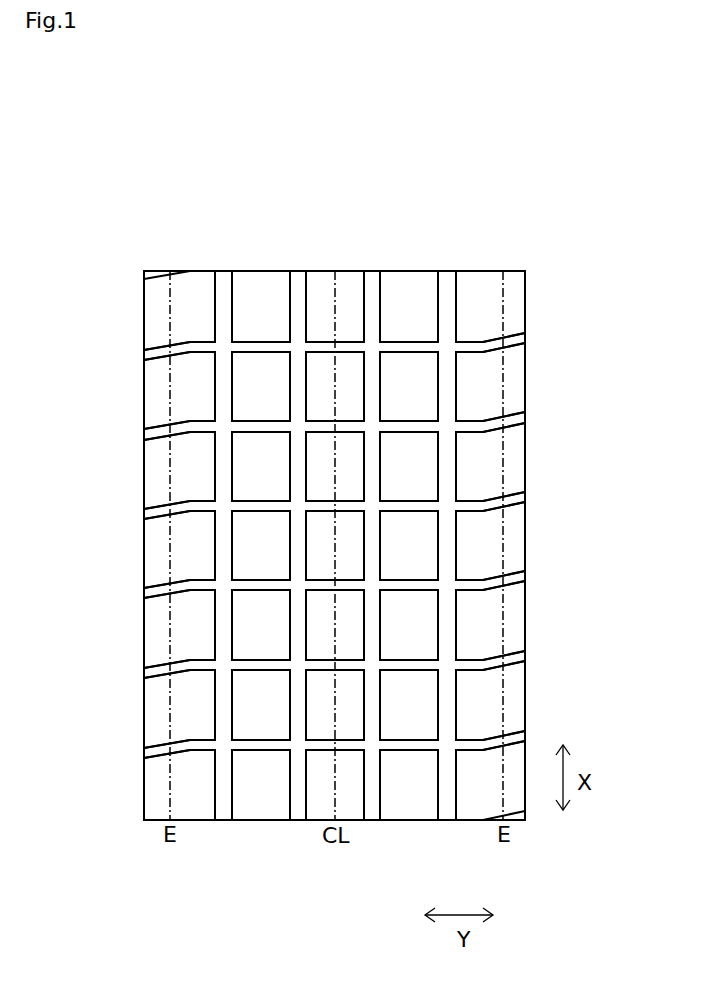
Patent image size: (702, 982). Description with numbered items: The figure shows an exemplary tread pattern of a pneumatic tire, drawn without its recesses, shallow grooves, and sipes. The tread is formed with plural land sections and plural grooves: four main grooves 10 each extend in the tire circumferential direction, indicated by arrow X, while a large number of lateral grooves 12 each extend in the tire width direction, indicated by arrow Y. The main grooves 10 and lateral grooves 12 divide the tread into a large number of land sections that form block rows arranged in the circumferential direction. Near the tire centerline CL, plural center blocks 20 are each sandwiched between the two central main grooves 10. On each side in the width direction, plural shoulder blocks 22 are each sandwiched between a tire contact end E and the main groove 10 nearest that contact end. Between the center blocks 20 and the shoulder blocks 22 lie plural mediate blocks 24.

The main groove 10 is at (223, 280).
The lateral groove 12 is at (525, 334).
The center block 20 is at (345, 278).
The shoulder block 22 is at (193, 278).
The mediate block 24 is at (260, 278).